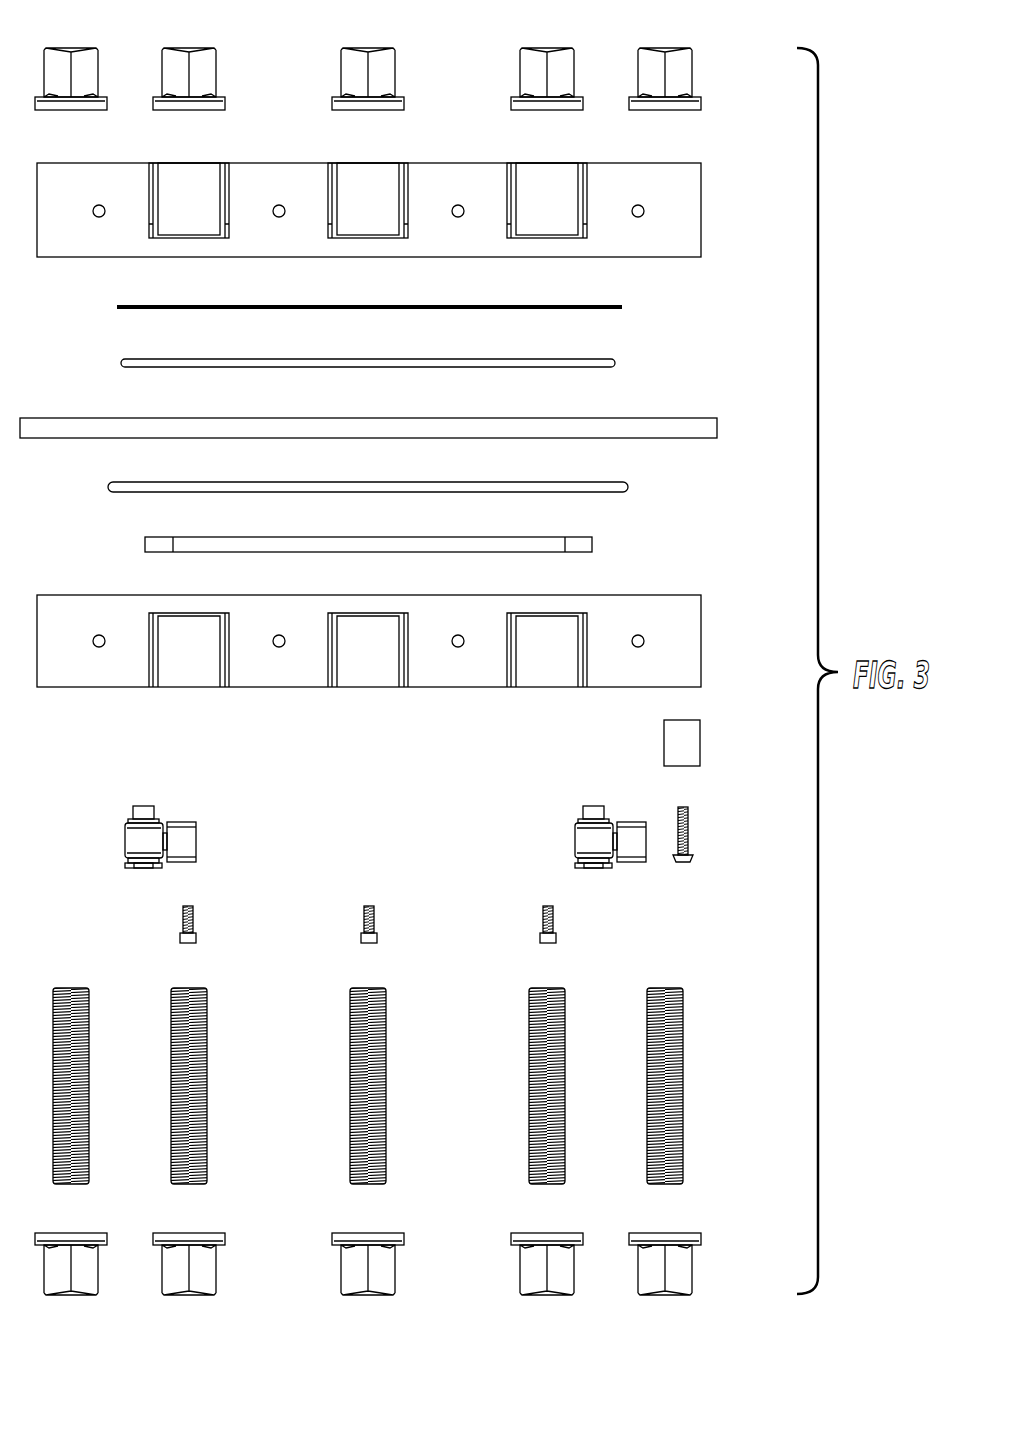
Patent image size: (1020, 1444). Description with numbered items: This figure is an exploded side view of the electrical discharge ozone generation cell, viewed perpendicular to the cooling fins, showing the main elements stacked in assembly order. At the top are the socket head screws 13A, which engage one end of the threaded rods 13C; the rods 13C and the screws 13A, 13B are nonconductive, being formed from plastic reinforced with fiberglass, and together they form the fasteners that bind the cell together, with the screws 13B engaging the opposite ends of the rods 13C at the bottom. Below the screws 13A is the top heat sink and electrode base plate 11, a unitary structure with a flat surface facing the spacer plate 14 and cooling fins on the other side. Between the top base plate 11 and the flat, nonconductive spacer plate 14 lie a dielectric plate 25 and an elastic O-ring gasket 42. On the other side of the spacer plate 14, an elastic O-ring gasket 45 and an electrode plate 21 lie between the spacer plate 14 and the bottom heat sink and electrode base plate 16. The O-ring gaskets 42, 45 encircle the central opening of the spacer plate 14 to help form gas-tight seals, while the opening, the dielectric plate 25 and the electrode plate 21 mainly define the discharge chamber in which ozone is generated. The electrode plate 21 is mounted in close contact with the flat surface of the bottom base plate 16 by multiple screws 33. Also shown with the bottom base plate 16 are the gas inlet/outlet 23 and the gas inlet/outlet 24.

The socket head screw 13A is at (525, 67).
The top heat sink and electrode base plate 11 is at (695, 240).
The dielectric plate 25 is at (620, 307).
The elastic O-ring gasket 42 is at (615, 363).
The spacer plate 14 is at (717, 427).
The elastic O-ring gasket 45 is at (628, 487).
The electrode plate 21 is at (592, 545).
The bottom heat sink and electrode base plate 16 is at (695, 672).
The gas inlet/outlet 23 is at (193, 843).
The gas inlet/outlet 24 is at (630, 857).
The screw 33 is at (370, 920).
The threaded rod 13C is at (349, 1070).
The socket head screw 13B is at (86, 1287).